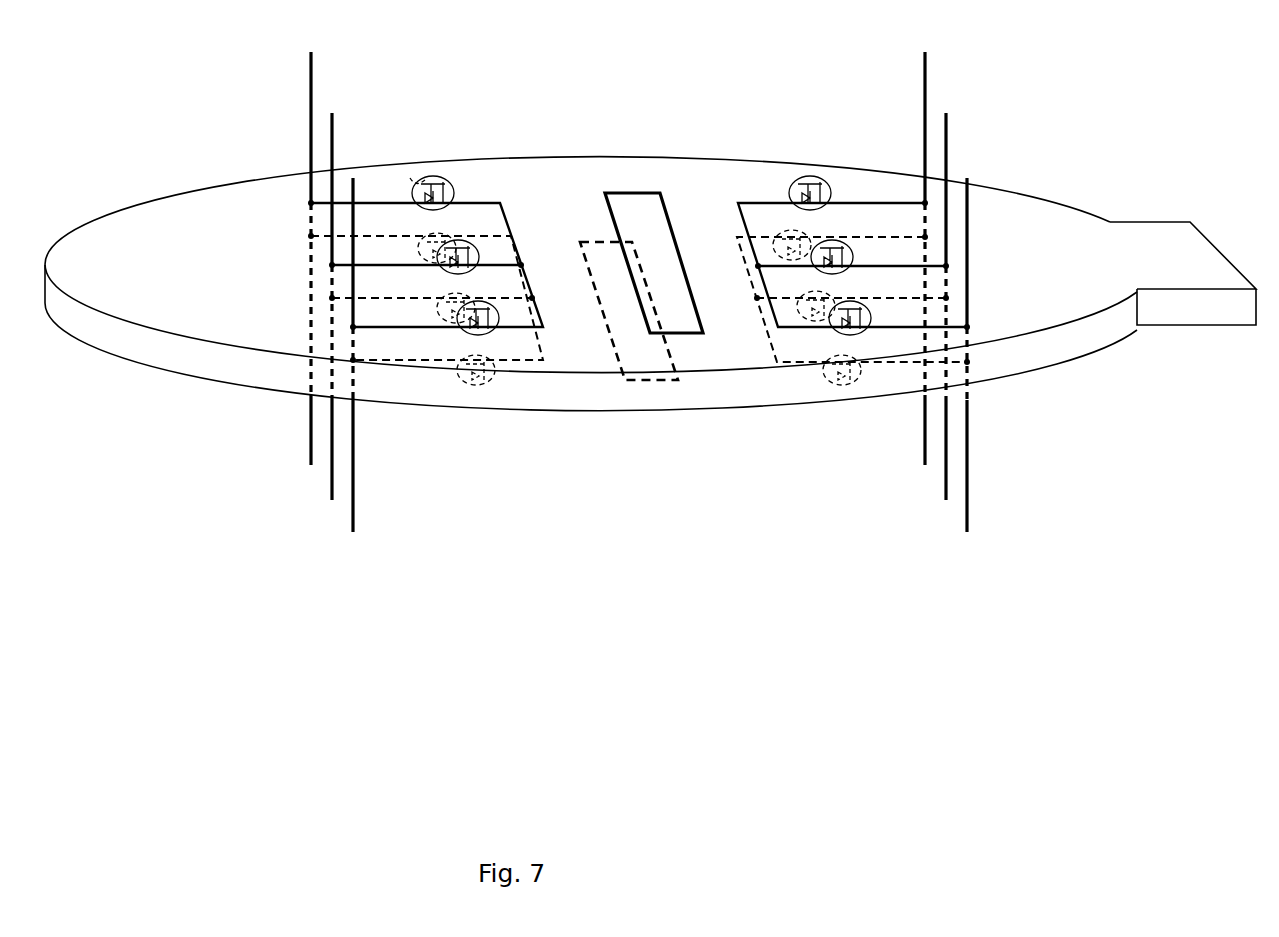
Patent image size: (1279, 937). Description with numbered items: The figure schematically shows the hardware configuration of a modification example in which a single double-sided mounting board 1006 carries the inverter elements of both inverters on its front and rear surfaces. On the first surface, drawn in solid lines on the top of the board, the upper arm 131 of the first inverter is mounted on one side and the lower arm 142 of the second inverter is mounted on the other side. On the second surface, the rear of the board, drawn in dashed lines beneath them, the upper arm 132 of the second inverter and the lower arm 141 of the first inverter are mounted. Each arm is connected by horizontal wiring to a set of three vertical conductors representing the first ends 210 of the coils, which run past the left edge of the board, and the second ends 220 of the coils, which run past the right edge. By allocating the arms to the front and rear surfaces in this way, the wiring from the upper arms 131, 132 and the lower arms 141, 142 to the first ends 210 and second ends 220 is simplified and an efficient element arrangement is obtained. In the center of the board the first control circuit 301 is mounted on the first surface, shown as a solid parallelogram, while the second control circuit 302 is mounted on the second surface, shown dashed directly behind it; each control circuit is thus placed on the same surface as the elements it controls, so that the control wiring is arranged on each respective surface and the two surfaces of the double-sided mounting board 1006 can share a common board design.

The double-sided mounting board 1006 is at (173, 223).
The first ends of the coils 210 is at (353, 190).
The second ends of the coils 220 is at (967, 190).
The upper arm of the first inverter 131 is at (477, 208).
The lower arm of the first inverter 141 is at (438, 360).
The lower arm of the second inverter 142 is at (781, 208).
The upper arm of the second inverter 132 is at (795, 365).
The first control circuit 301 is at (637, 200).
The second control circuit 302 is at (643, 355).